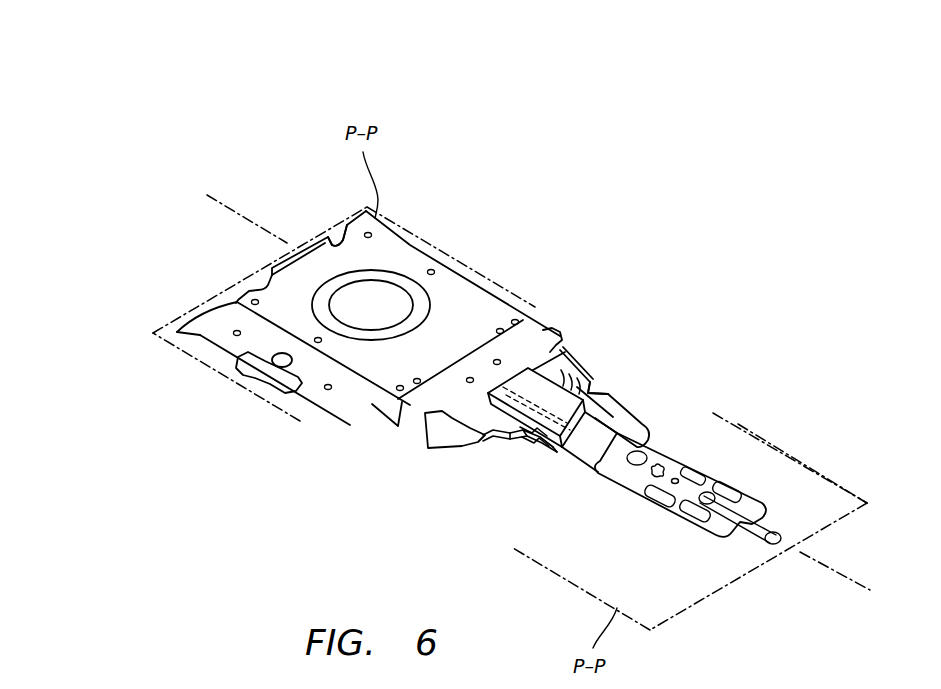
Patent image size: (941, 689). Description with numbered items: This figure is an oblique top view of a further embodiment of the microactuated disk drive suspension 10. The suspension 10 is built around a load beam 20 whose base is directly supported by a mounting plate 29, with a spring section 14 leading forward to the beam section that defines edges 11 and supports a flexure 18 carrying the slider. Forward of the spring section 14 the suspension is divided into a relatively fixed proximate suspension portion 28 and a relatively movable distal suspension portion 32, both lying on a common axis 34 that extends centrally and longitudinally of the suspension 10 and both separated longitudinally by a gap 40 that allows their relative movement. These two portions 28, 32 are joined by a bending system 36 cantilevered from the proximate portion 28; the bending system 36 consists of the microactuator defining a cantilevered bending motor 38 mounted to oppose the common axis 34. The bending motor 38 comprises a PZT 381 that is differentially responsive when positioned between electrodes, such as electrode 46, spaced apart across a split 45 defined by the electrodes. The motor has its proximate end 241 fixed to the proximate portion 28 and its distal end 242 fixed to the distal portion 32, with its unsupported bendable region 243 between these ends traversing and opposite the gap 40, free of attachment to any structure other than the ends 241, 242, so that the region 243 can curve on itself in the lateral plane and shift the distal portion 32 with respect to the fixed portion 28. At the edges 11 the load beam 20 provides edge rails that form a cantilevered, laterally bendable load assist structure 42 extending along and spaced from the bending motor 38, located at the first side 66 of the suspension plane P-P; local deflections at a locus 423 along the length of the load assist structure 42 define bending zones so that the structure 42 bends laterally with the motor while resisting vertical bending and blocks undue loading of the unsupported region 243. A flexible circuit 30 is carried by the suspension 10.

The microactuated suspension 10 is at (290, 195).
The edges 11 is at (585, 353).
The spring section 14 is at (377, 415).
The flexure 18 is at (722, 478).
The load beam 20 is at (428, 257).
The proximate suspension portion 28 is at (538, 345).
The mounting plate 29 is at (375, 252).
The flexible circuit 30 is at (437, 440).
The distal suspension portion 32 is at (738, 424).
The common axis 34 is at (238, 217).
The bending system 36 is at (581, 354).
The bending motor 38 is at (510, 442).
The gap 40 is at (583, 360).
The load assist structure 42 is at (493, 440).
The split 45 is at (558, 435).
The electrode 46 is at (631, 408).
The first side of suspension plane 66 is at (335, 236).
The proximate end of bending motor 241 is at (505, 395).
The distal end of bending motor 242 is at (560, 430).
The unsupported bendable region 243 is at (585, 410).
The PZT 381 is at (592, 376).
The locus of deflection 423 is at (498, 460).